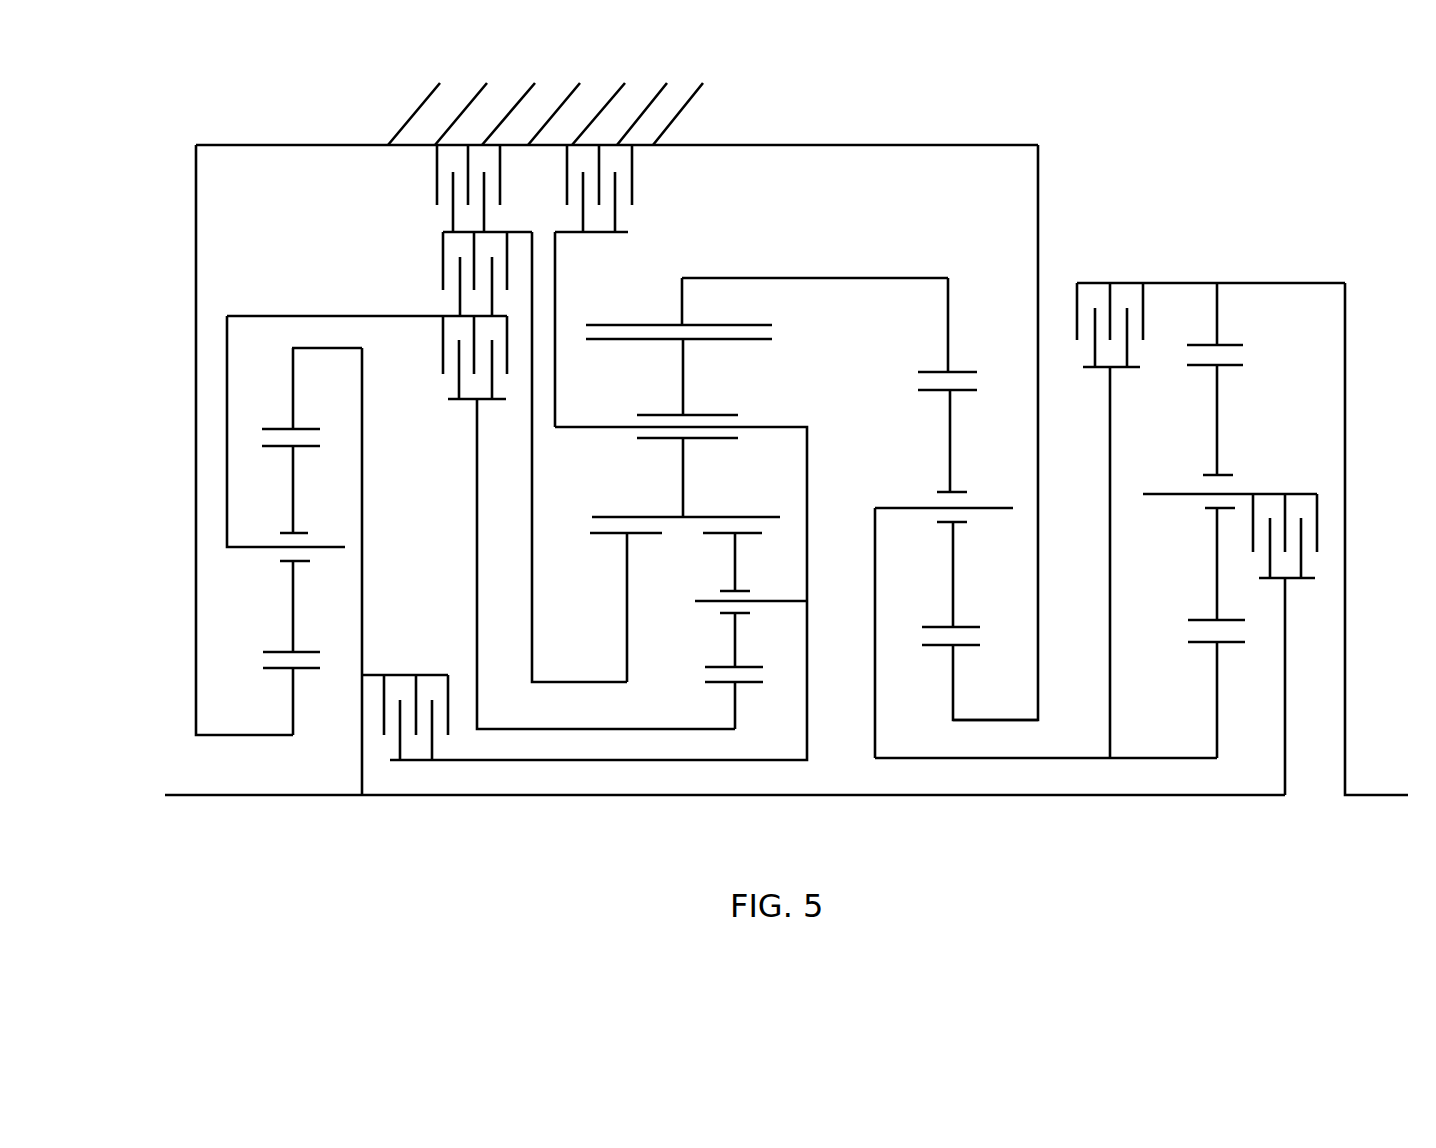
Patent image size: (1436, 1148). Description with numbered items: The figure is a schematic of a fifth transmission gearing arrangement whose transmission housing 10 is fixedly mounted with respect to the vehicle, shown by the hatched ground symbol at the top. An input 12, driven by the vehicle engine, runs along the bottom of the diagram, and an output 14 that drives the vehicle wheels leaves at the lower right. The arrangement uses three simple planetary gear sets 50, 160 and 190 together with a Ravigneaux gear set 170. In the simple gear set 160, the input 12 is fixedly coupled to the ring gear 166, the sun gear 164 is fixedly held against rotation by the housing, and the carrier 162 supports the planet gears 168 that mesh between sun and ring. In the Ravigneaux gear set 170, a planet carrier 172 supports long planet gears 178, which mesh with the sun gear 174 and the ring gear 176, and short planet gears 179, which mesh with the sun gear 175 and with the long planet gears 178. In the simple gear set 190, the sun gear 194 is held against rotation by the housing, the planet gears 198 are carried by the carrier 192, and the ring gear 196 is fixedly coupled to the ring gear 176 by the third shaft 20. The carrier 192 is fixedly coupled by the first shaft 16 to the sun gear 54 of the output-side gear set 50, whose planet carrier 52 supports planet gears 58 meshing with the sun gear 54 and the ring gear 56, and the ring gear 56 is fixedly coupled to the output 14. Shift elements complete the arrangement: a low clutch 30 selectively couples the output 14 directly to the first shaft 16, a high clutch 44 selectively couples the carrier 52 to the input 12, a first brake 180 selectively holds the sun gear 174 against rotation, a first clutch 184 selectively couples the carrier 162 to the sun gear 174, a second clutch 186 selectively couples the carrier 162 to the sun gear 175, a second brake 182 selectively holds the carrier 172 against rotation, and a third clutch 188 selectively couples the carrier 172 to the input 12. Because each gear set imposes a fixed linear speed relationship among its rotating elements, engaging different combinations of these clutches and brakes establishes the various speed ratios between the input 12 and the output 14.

The transmission housing 10 is at (420, 105).
The input 12 is at (407, 796).
The output 14 is at (1387, 795).
The first shaft 16 is at (1063, 758).
The third shaft 20 is at (865, 278).
The low clutch 30 is at (1100, 283).
The high clutch 44 is at (1298, 498).
The simple planetary gear set 50 is at (1222, 839).
The planet carrier 52 is at (1160, 495).
The sun gear 54 is at (1217, 723).
The ring gear 56 is at (1217, 318).
The planet gears 58 is at (1220, 433).
The simple planetary gear set 160 is at (335, 584).
The carrier 162 is at (250, 552).
The sun gear 164 is at (295, 720).
The ring gear 166 is at (290, 385).
The planet gears 168 is at (293, 497).
The Ravigneaux gear set 170 is at (680, 839).
The planet carrier 172 is at (778, 425).
The sun gear 174 is at (625, 630).
The sun gear 175 is at (735, 712).
The ring gear 176 is at (682, 303).
The long planet gears 178 is at (682, 383).
The short planet gears 179 is at (730, 562).
The first brake 180 is at (438, 183).
The second brake 182 is at (630, 180).
The first clutch 184 is at (443, 263).
The second clutch 186 is at (440, 340).
The third clutch 188 is at (398, 675).
The simple planetary gear set 190 is at (977, 849).
The carrier 192 is at (883, 507).
The sun gear 194 is at (953, 682).
The ring gear 196 is at (943, 312).
The planet gears 198 is at (952, 437).